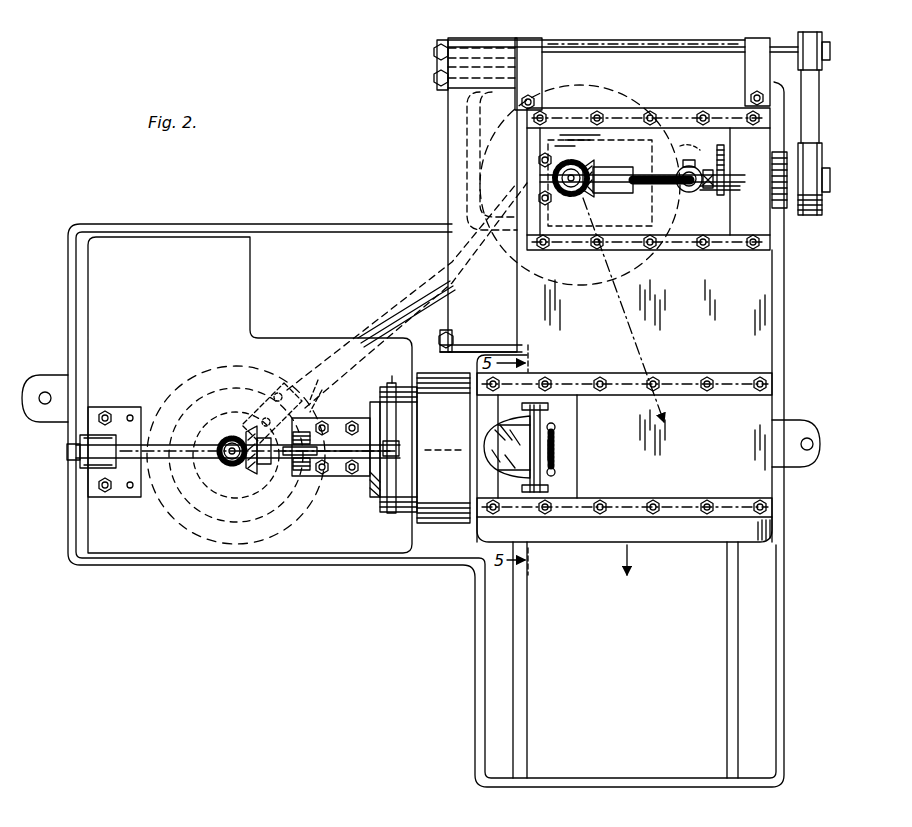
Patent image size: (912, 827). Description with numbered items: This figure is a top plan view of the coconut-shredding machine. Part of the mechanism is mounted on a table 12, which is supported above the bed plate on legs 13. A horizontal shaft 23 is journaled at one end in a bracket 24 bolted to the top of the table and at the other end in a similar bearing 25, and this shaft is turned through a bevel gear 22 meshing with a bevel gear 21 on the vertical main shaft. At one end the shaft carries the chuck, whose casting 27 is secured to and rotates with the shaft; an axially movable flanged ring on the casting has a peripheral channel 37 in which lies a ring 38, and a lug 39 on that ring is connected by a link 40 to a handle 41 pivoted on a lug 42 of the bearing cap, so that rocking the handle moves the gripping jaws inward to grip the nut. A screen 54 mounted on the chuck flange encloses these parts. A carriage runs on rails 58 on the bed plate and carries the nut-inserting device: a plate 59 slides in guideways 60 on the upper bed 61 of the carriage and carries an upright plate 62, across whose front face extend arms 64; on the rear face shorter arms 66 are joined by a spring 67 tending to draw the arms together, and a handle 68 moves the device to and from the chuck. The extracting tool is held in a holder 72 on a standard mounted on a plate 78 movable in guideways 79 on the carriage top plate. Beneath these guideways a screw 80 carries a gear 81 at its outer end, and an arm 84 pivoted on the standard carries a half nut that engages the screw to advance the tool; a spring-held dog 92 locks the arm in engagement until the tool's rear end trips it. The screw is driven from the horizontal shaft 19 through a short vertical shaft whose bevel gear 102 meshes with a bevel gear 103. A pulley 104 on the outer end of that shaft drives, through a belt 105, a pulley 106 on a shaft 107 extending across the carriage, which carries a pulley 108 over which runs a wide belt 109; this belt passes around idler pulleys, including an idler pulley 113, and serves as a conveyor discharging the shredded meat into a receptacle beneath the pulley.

The table 12 is at (250, 395).
The legs 13 is at (68, 340).
The horizontal shaft 19 is at (404, 308).
The bevel gear 21 is at (240, 470).
The bevel gear 22 is at (235, 432).
The shaft 23 is at (170, 432).
The bracket 24 is at (130, 497).
The bearing 25 is at (340, 478).
The casting 27 is at (382, 505).
The peripheral channel 37 is at (376, 400).
The ring 38 is at (392, 380).
The lug 39 is at (400, 448).
The link 40 is at (320, 440).
The handle 41 is at (300, 418).
The lug 42 is at (293, 462).
The screen 54 is at (448, 523).
The rails 58 is at (528, 654).
The plate 59 is at (560, 445).
The guideways 60 is at (772, 378).
The upper bed 61 is at (775, 328).
The upright plate 62 is at (541, 405).
The arms 64 is at (512, 424).
The shorter arms 66 is at (556, 427).
The spring 67 is at (556, 462).
The handle 68 is at (556, 455).
The holder 72 is at (688, 193).
The plate 78 is at (718, 235).
The guideways 79 is at (686, 112).
The screw 80 is at (615, 170).
The gear 81 is at (782, 208).
The arm 84 is at (724, 196).
The spring-held dog 92 is at (708, 190).
The bevel gear 102 is at (568, 162).
The bevel gear 103 is at (589, 166).
The pulley 104 is at (824, 180).
The belt 105 is at (822, 110).
The pulley 106 is at (830, 60).
The shaft 107 is at (660, 52).
The pulley 108 is at (437, 44).
The wide belt 109 is at (452, 150).
The idler pulley 113 is at (440, 335).